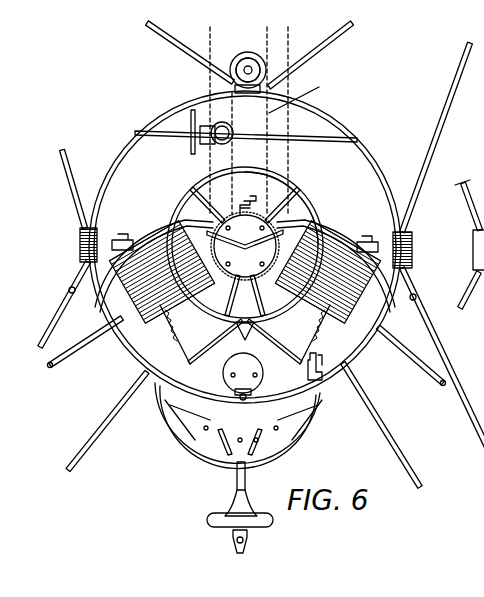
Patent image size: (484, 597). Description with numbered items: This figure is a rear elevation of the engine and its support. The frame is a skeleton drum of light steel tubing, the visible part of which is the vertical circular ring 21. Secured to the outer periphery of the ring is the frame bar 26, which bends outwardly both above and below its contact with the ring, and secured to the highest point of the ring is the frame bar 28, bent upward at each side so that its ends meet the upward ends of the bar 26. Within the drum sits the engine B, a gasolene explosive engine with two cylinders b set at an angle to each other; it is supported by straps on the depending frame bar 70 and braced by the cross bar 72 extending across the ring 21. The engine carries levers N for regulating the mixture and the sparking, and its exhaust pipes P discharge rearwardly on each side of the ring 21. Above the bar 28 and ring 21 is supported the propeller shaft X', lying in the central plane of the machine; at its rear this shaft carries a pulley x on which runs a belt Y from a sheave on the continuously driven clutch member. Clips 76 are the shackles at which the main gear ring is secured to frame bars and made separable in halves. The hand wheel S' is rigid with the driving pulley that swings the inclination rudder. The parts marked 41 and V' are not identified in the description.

The frame bar 26 is at (67, 163).
The frame bar 28 is at (325, 44).
The circular ring 21 is at (357, 140).
The cross bar 72 is at (332, 250).
The clips 76 is at (473, 250).
The depending frame bar 70 is at (300, 430).
The lower struts 41 is at (383, 422).
The propeller shaft X' is at (243, 61).
The pulley x is at (256, 58).
The belt Y is at (300, 95).
The rod adjusting mechanism V' is at (195, 148).
The hand wheel S' is at (286, 208).
The levers N is at (245, 238).
The cylinders b is at (245, 334).
The engine B is at (272, 376).
The exhaust pipes P is at (55, 364).